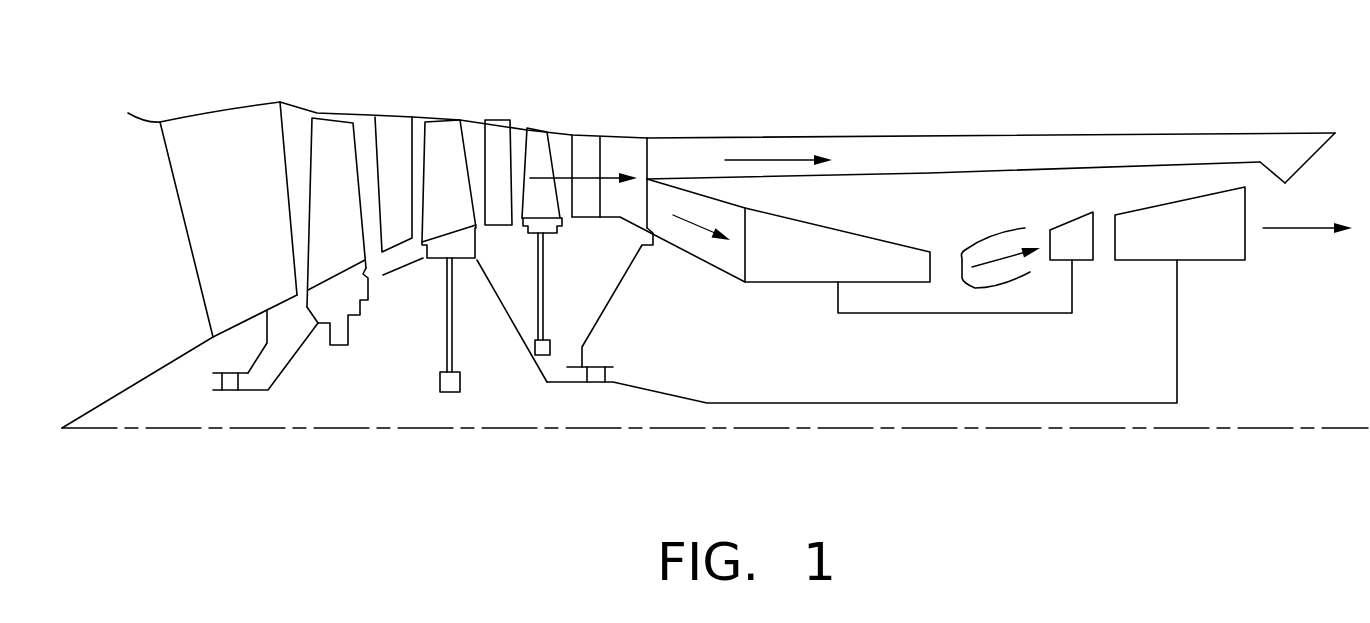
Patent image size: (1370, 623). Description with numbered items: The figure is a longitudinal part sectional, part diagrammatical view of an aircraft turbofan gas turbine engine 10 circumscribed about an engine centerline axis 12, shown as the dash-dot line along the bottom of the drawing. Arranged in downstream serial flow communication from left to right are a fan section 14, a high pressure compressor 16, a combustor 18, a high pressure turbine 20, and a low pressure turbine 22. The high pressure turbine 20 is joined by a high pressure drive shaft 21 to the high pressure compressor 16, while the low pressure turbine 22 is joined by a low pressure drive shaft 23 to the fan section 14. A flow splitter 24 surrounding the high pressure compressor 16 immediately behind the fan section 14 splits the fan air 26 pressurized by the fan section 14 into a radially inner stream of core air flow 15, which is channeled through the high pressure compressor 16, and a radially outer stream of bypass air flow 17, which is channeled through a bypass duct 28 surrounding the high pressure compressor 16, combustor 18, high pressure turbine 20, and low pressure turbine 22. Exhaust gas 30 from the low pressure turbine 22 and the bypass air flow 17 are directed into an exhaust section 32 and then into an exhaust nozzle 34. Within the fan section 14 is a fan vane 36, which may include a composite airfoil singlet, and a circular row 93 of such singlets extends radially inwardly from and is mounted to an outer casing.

The aircraft turbofan gas turbine engine 10 is at (513, 477).
The engine centerline axis 12 is at (1163, 428).
The fan section 14 is at (431, 91).
The core air flow 15 is at (690, 227).
The high pressure compressor 16 is at (832, 227).
The bypass air flow 17 is at (763, 158).
The combustor 18 is at (1007, 233).
The high pressure turbine 20 is at (1078, 217).
The high pressure drive shaft 21 is at (943, 315).
The low pressure turbine 22 is at (1217, 262).
The low pressure drive shaft 23 is at (825, 402).
The flow splitter 24 is at (687, 180).
The fan air 26 is at (570, 177).
The bypass duct 28 is at (893, 157).
The exhaust gas 30 is at (1295, 230).
The exhaust section 32 is at (1327, 209).
The exhaust nozzle 34 is at (1317, 155).
The fan vane 36 is at (398, 117).
The circular row of singlets 93 is at (390, 230).